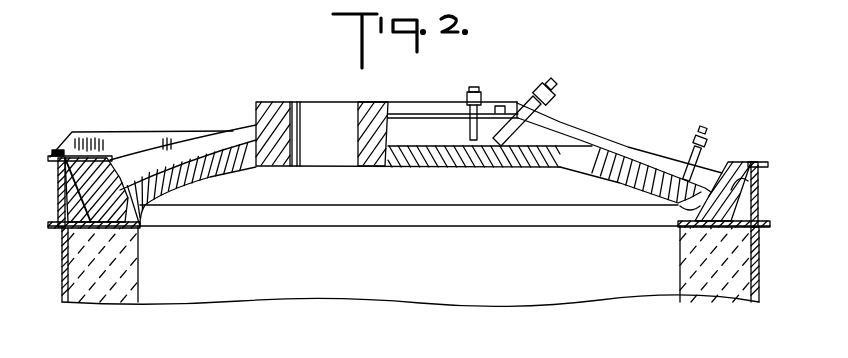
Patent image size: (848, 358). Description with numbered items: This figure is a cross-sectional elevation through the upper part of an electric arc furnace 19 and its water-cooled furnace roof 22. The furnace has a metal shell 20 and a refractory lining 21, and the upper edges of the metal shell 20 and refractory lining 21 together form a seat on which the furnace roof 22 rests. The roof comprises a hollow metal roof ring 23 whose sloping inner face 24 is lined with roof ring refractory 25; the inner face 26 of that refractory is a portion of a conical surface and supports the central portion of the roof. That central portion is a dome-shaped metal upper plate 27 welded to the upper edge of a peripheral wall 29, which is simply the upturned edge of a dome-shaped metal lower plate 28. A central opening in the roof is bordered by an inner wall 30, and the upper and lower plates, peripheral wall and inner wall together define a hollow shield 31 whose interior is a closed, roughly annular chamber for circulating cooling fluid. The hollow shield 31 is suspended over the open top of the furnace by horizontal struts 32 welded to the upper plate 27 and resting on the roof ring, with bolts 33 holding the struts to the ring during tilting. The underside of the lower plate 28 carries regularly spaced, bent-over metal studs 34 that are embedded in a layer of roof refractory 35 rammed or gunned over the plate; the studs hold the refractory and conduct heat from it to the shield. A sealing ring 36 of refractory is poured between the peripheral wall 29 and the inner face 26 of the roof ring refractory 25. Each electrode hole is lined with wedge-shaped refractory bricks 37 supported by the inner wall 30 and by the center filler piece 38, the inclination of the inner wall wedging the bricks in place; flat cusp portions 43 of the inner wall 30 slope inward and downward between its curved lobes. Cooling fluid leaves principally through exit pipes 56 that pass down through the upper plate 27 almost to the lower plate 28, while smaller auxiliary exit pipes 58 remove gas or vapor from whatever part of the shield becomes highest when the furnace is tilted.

The electric arc furnace 19 is at (58, 283).
The metal shell 20 is at (62, 250).
The refractory lining 21 is at (107, 297).
The furnace roof 22 is at (657, 150).
The hollow metal roof ring 23 is at (57, 190).
The sloping inner face 24 is at (752, 180).
The roof ring refractory 25 is at (741, 161).
The inner face of the roof ring refractory 26 is at (695, 207).
The dome-shaped metal upper plate 27 is at (625, 112).
The dome-shaped metal lower plate 28 is at (611, 157).
The peripheral wall 29 is at (707, 166).
The inner wall 30 is at (265, 103).
The hollow shield 31 is at (238, 126).
The horizontal struts 32 is at (102, 143).
The bolts 33 is at (57, 150).
The metal studs 34 is at (460, 150).
The roof refractory 35 is at (223, 178).
The sealing ring 36 is at (108, 160).
The wedge-shaped refractory bricks 37 is at (372, 110).
The center filler piece 38 is at (413, 113).
The cusp portions 43 is at (480, 147).
The exit pipes 56 is at (548, 118).
The auxiliary exit pipes 58 is at (684, 160).